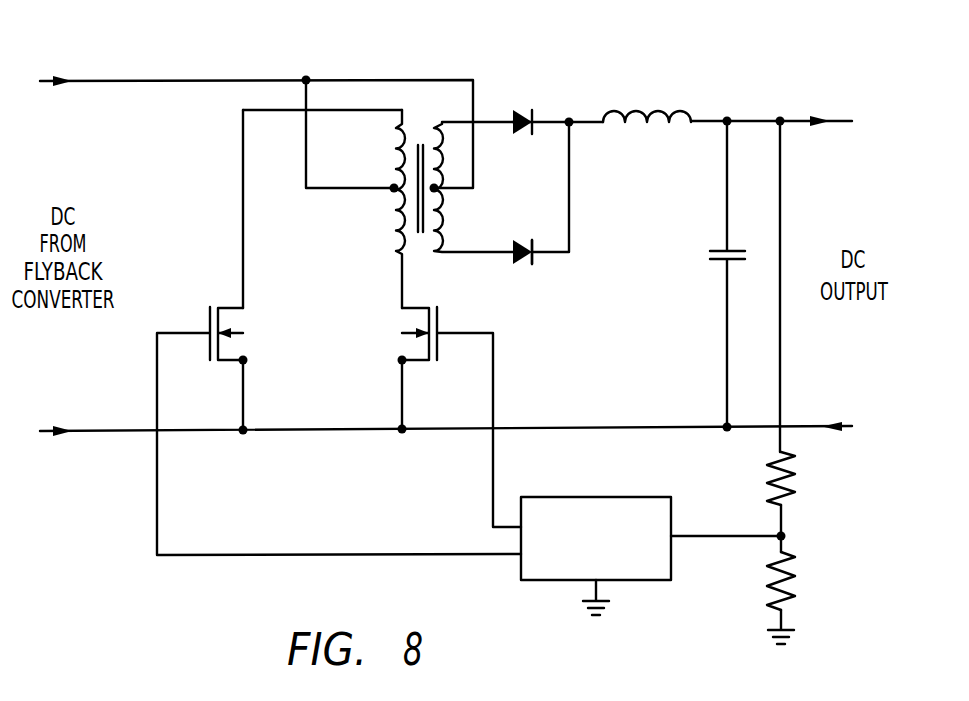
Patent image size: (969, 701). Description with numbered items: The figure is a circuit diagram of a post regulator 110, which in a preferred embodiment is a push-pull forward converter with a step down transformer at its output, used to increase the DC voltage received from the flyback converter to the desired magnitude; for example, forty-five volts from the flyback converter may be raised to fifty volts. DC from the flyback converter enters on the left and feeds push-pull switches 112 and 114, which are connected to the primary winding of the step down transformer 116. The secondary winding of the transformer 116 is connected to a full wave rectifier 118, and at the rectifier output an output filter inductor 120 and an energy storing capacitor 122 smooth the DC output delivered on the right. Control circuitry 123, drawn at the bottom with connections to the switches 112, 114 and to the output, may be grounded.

The post regulator 110 is at (571, 80).
The push-pull switch 112 is at (250, 337).
The push-pull switch 114 is at (400, 335).
The step down transformer 116 is at (422, 135).
The full wave rectifier 118 is at (527, 267).
The output filter inductor 120 is at (690, 108).
The energy storing capacitor 122 is at (713, 261).
The control circuitry 123 is at (608, 497).